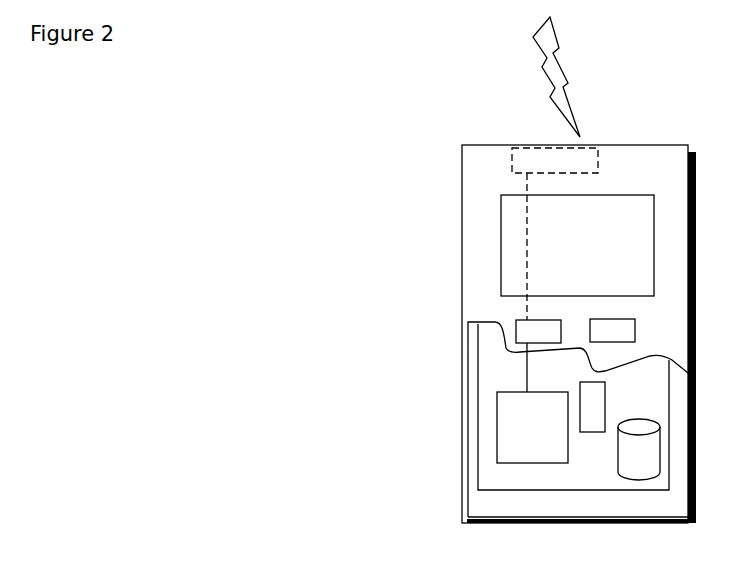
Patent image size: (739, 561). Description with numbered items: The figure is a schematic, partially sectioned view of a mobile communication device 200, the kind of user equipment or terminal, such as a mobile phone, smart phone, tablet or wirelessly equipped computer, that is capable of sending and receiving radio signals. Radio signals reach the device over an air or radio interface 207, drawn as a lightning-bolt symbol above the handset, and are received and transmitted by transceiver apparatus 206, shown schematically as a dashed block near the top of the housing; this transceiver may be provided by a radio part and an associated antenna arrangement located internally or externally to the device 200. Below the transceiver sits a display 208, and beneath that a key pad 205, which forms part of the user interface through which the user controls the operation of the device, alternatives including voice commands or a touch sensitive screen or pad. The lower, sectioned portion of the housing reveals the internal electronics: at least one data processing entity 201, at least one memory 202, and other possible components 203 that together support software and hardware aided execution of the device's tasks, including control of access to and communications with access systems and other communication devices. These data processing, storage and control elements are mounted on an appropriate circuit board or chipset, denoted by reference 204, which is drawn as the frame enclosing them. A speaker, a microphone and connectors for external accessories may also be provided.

The device 200 is at (461, 178).
The data processing entity 201 is at (503, 415).
The memory 202 is at (633, 457).
The other possible components 203 is at (592, 395).
The circuit board 204 is at (497, 478).
The key pad 205 is at (515, 329).
The transceiver apparatus 206 is at (588, 157).
The air or radio interface 207 is at (578, 95).
The display 208 is at (513, 236).